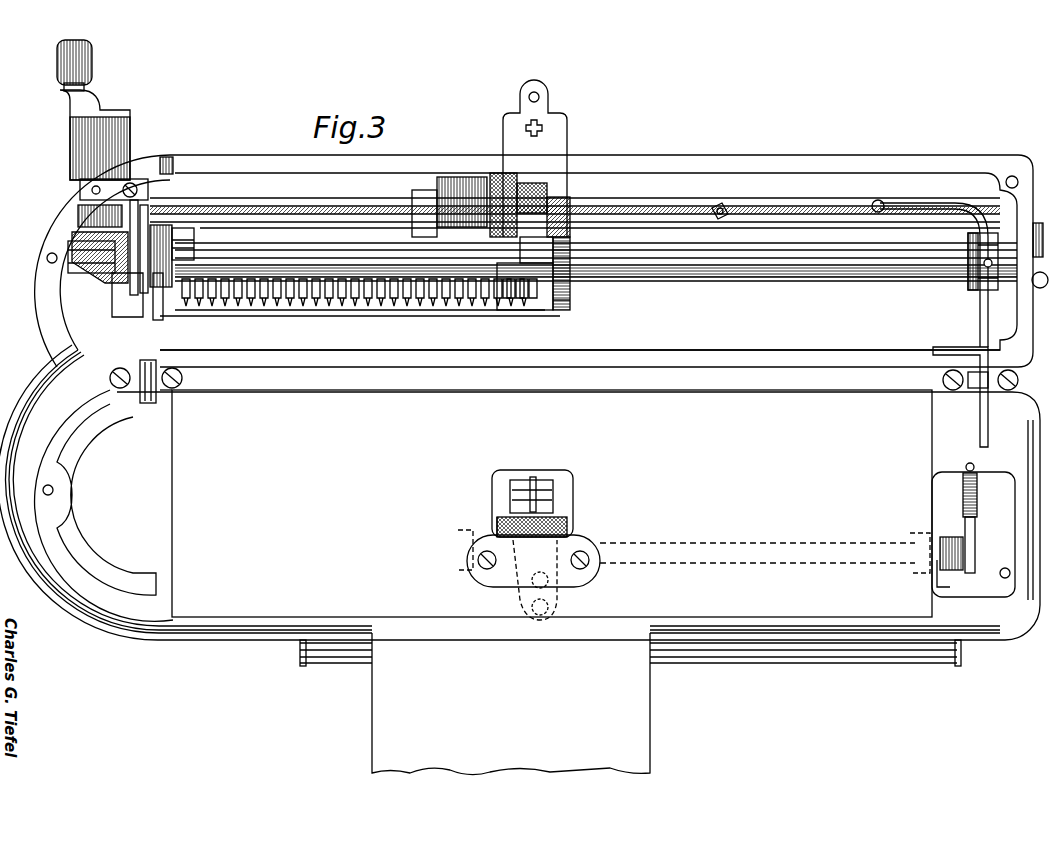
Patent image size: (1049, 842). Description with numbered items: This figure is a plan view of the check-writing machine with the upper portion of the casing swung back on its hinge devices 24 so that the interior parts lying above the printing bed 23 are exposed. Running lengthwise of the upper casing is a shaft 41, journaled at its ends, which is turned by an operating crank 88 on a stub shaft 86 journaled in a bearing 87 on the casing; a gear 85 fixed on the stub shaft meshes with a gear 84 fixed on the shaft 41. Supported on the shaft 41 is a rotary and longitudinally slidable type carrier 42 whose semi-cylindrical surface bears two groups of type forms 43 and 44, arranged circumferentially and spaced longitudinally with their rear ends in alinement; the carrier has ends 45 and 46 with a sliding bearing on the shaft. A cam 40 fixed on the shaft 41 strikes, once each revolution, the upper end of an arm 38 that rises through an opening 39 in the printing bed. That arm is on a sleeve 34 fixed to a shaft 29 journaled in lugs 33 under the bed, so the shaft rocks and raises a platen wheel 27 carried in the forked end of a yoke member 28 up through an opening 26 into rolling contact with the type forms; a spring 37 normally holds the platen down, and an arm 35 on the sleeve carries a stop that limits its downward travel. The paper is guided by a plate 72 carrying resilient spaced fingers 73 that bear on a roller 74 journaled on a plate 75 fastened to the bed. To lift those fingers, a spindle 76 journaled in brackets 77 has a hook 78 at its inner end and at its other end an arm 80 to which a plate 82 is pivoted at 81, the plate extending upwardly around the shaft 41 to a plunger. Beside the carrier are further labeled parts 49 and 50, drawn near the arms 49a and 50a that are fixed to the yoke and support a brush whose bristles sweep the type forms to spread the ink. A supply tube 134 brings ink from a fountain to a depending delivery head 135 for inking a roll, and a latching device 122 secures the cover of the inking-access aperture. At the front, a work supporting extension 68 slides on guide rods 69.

The printing bed 23 is at (552, 503).
The hinge devices 24 is at (165, 390).
The opening 26 is at (575, 487).
The platen wheel 27 is at (540, 478).
The yoke member 28 is at (565, 513).
The shaft 29 is at (665, 542).
The lugs 33 is at (458, 565).
The sleeve 34 is at (955, 537).
The arm 35 is at (940, 588).
The spring 37 is at (977, 490).
The arm 38 is at (975, 537).
The opening 39 is at (1003, 472).
The cam 40 is at (968, 285).
The shaft 41 is at (700, 272).
The type carrier 42 is at (540, 292).
The type forms 43 is at (380, 305).
The type forms 44 is at (520, 300).
The end 45 is at (550, 255).
The end 46 is at (190, 250).
The gear 49 is at (565, 262).
The arm 49a is at (565, 305).
The gear 50 is at (170, 265).
The arm 50a is at (160, 300).
The work supporting extension 68 is at (511, 704).
The guide rods 69 is at (740, 663).
The plate 72 is at (560, 125).
The resilient spaced fingers 73 is at (560, 220).
The roller 74 is at (500, 517).
The plate 75 is at (495, 576).
The spindle 76 is at (290, 210).
The brackets 77 is at (148, 192).
The hook 78 is at (548, 192).
The arm 80 is at (110, 252).
The pivot 81 is at (130, 262).
The plate 82 is at (140, 290).
The gear 84 is at (142, 272).
The gear 85 is at (72, 232).
The stub shaft 86 is at (82, 208).
The bearing 87 is at (72, 158).
The operating crank 88 is at (93, 58).
The latching device 122 is at (727, 211).
The supply tube 134 is at (925, 200).
The delivery head 135 is at (879, 200).